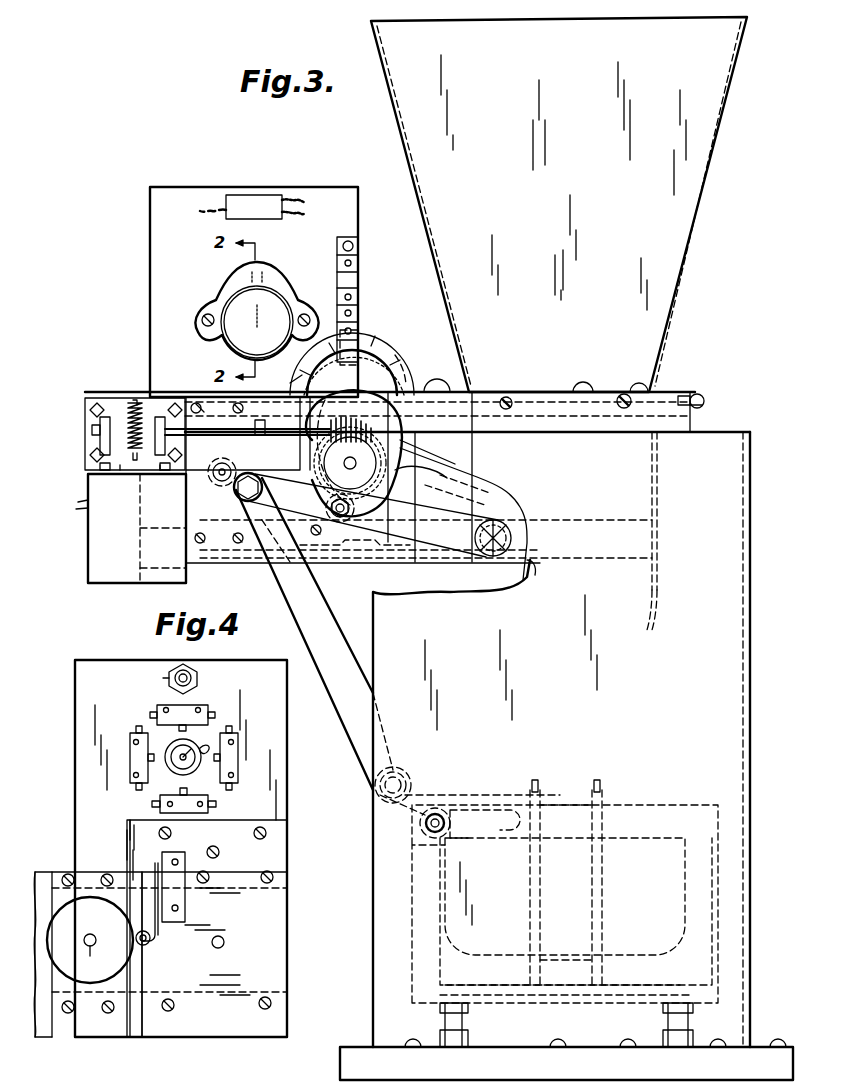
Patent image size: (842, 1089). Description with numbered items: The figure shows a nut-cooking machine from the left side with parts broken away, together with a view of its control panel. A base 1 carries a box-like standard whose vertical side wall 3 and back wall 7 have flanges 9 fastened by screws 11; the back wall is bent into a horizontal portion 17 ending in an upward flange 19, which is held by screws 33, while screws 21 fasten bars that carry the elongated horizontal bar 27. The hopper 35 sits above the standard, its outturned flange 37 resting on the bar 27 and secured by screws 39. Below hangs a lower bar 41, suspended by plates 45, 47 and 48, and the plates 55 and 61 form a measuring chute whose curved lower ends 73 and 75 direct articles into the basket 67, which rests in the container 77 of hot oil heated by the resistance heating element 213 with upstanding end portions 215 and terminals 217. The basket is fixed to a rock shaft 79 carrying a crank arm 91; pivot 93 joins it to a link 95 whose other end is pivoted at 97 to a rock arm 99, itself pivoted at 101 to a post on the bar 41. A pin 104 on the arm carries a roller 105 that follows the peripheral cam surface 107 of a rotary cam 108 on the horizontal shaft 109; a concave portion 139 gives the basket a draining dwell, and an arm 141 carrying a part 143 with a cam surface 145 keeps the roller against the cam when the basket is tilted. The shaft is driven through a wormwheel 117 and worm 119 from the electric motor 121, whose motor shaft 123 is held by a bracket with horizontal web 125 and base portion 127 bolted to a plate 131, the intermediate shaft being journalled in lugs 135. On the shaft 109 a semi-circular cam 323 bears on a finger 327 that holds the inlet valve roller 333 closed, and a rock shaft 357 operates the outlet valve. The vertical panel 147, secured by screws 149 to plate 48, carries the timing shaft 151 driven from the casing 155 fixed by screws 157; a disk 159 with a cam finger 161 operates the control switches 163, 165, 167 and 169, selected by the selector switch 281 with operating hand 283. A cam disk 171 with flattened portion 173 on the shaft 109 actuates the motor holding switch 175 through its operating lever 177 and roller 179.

In FIG. 3, the base 1 is at (340, 1073).
In FIG. 3, the vertical side wall 3 is at (730, 660).
In FIG. 3, the vertical back wall 7 is at (752, 584).
In FIG. 3, the flanges 9 is at (606, 1047).
In FIG. 3, the screws 11 is at (556, 1043).
In FIG. 3, the horizontal inwardly extending portion 17 is at (718, 431).
In FIG. 3, the upwardly extending flange 19 is at (691, 392).
In FIG. 3, the screws 21 is at (508, 398).
In FIG. 4, the elongated horizontal bar 27 is at (44, 872).
In FIG. 3, the screws 33 is at (704, 401).
In FIG. 3, the hopper 35 is at (672, 295).
In FIG. 3, the outturned horizontal flange 37 is at (556, 392).
In FIG. 3, the screws 39 is at (637, 389).
In FIG. 3, the elongated horizontal bar 41 is at (560, 520).
In FIG. 4, the elongated horizontal bar 41 is at (40, 1038).
In FIG. 3, the plate 45 is at (400, 452).
In FIG. 4, the plate 45 is at (52, 976).
In FIG. 3, the plate 47 is at (258, 454).
In FIG. 4, the plate 48 is at (288, 946).
In FIG. 3, the plate 55 is at (490, 484).
In FIG. 3, the plate 61 is at (656, 484).
In FIG. 3, the basket 67 is at (688, 830).
In FIG. 3, the lower end of plate 55 73 is at (505, 492).
In FIG. 3, the lower end of plate 61 75 is at (656, 612).
In FIG. 3, the container 77 is at (712, 905).
In FIG. 3, the rock shaft 79 is at (425, 830).
In FIG. 3, the crank arm 91 is at (425, 800).
In FIG. 3, the pivot 93 is at (400, 776).
In FIG. 3, the link 95 is at (348, 740).
In FIG. 3, the pivot 97 is at (246, 500).
In FIG. 3, the rock arm 99 is at (371, 530).
In FIG. 3, the pivot 101 is at (493, 520).
In FIG. 3, the pin 104 is at (345, 530).
In FIG. 3, the roller 105 is at (335, 563).
In FIG. 3, the peripheral cam surface 107 is at (378, 346).
In FIG. 3, the rotary cam 108 is at (296, 380).
In FIG. 3, the horizontal shaft 109 is at (335, 458).
In FIG. 4, the horizontal shaft 109 is at (97, 951).
In FIG. 3, the wormwheel 117 is at (135, 398).
In FIG. 3, the worm 119 is at (92, 430).
In FIG. 3, the electric motor 121 is at (88, 540).
In FIG. 3, the motor shaft 123 is at (126, 472).
In FIG. 3, the horizontal web 125 is at (158, 472).
In FIG. 3, the base portion 127 is at (108, 398).
In FIG. 3, the plate 131 is at (226, 464).
In FIG. 3, the lugs 135 is at (160, 416).
In FIG. 3, the concave portion 139 is at (330, 504).
In FIG. 3, the arm 141 is at (330, 375).
In FIG. 3, the part 143 is at (404, 368).
In FIG. 3, the cam surface 145 is at (398, 352).
In FIG. 3, the vertical panel 147 is at (150, 277).
In FIG. 4, the vertical panel 147 is at (88, 663).
In FIG. 4, the screws 149 is at (216, 848).
In FIG. 4, the timing shaft 151 is at (200, 748).
In FIG. 3, the casing 155 is at (270, 306).
In FIG. 3, the screws 157 is at (205, 326).
In FIG. 4, the disk 159 is at (172, 765).
In FIG. 4, the finger or cam 161 is at (212, 790).
In FIG. 4, the control switch 163 is at (234, 754).
In FIG. 4, the control switch 165 is at (130, 772).
In FIG. 4, the control switch 167 is at (168, 705).
In FIG. 4, the control switch 169 is at (140, 813).
In FIG. 4, the cam disk 171 is at (50, 932).
In FIG. 4, the flattened portion 173 is at (140, 936).
In FIG. 4, the motor holding switch 175 is at (176, 898).
In FIG. 4, the operating lever 177 is at (158, 930).
In FIG. 4, the roller 179 is at (147, 944).
In FIG. 3, the resistance heating element 213 is at (640, 985).
In FIG. 3, the upstanding end portions 215 is at (586, 805).
In FIG. 3, the terminals 217 is at (530, 795).
In FIG. 3, the selector switch 281 is at (270, 218).
In FIG. 4, the selector switch 281 is at (168, 678).
In FIG. 4, the operating hand 283 is at (197, 678).
In FIG. 3, the semi-circular cam 323 is at (418, 490).
In FIG. 3, the finger 327 is at (410, 478).
In FIG. 3, the roller 333 is at (455, 388).
In FIG. 3, the rock shaft 357 is at (218, 480).
In FIG. 4, the rock shaft 357 is at (222, 938).